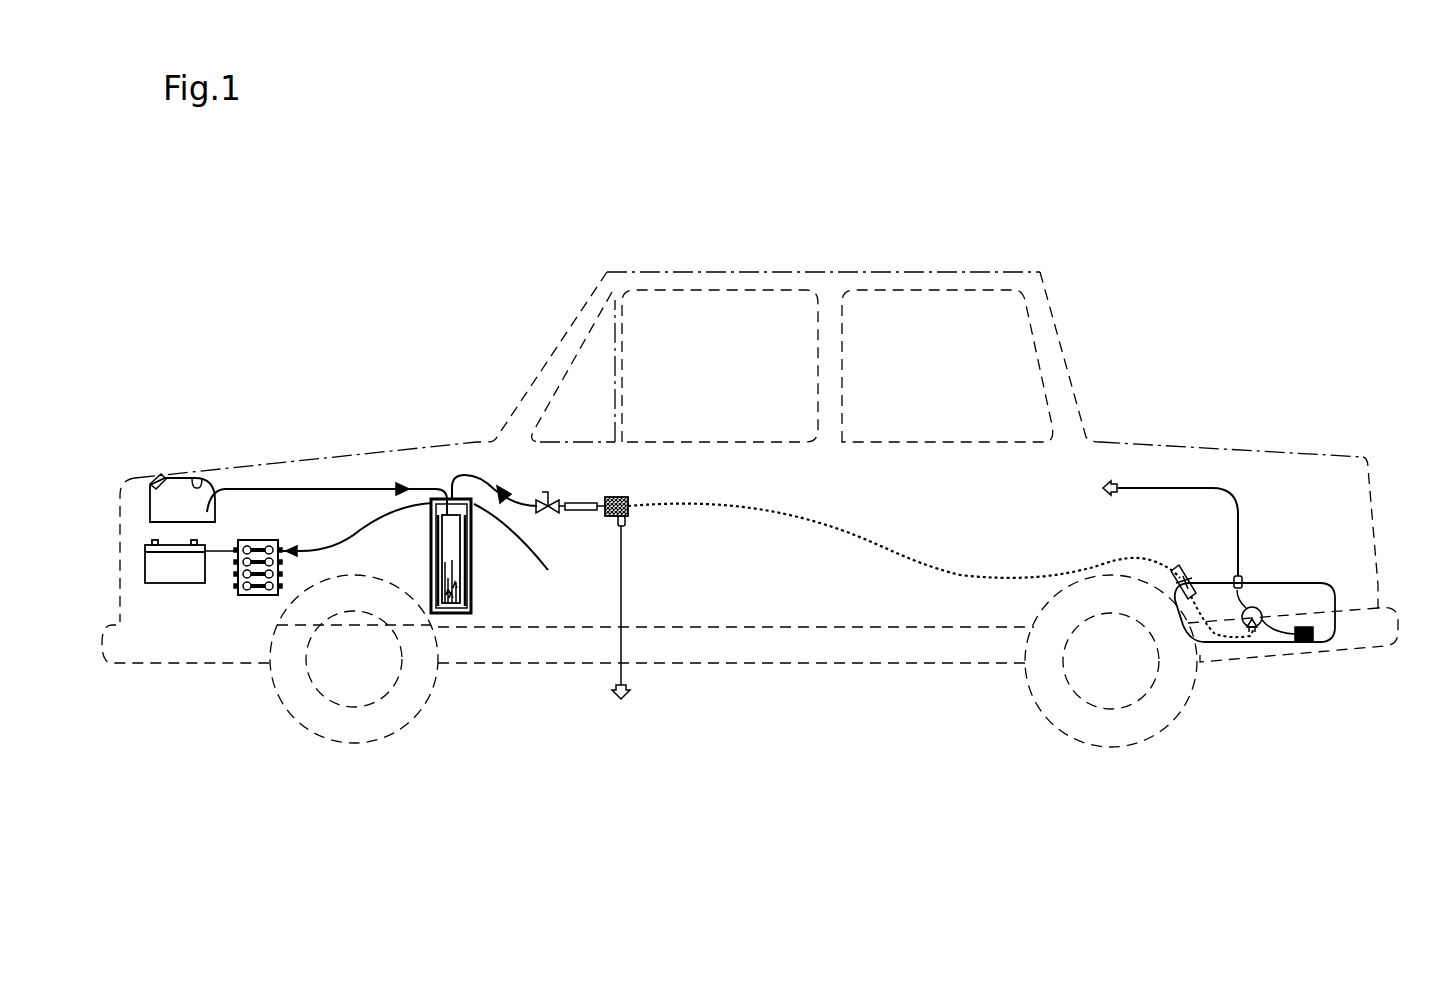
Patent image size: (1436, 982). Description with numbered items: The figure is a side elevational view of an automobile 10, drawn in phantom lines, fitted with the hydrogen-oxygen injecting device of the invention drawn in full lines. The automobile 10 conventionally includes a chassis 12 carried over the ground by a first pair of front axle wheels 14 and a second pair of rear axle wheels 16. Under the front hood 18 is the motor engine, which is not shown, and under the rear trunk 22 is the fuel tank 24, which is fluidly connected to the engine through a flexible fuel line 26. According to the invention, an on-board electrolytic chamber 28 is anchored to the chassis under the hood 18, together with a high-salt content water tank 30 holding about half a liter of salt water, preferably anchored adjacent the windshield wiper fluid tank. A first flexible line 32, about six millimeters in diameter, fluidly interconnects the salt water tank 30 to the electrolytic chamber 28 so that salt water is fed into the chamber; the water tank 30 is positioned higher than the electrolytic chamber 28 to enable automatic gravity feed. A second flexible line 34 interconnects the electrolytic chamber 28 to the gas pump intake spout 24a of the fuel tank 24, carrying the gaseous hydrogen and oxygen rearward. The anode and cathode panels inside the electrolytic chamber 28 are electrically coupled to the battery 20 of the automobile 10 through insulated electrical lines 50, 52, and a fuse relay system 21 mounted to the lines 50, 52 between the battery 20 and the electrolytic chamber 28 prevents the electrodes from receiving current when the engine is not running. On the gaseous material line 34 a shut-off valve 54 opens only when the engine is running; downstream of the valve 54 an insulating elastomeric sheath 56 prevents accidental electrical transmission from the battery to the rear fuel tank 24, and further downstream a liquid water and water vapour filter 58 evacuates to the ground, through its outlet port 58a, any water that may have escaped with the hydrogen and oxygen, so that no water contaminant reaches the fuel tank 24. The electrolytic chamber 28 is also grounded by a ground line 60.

The automobile 10 is at (582, 232).
The chassis 12 is at (712, 657).
The front axle wheels 14 is at (360, 740).
The rear axle wheels 16 is at (1087, 728).
The front hood 18 is at (325, 455).
The battery 20 is at (173, 583).
The fuse relay system 21 is at (250, 598).
The rear trunk 22 is at (1225, 452).
The fuel tank 24 is at (1277, 582).
The gas pump intake spout 24a is at (1260, 610).
The flexible fuel line 26 is at (1178, 488).
The electrolytic chamber 28 is at (483, 593).
The high-salt content water tank 30 is at (196, 486).
The first flexible line 32 is at (263, 488).
The second flexible line 34 is at (475, 477).
The insulated electrical line 50 is at (345, 538).
The insulated electrical line 52 is at (363, 647).
The shut-off valve 54 is at (557, 498).
The insulating elastomeric sheath 56 is at (578, 502).
The liquid water and water vapour filter 58 is at (618, 497).
The outlet port 58a is at (628, 516).
The ground line 60 is at (536, 562).